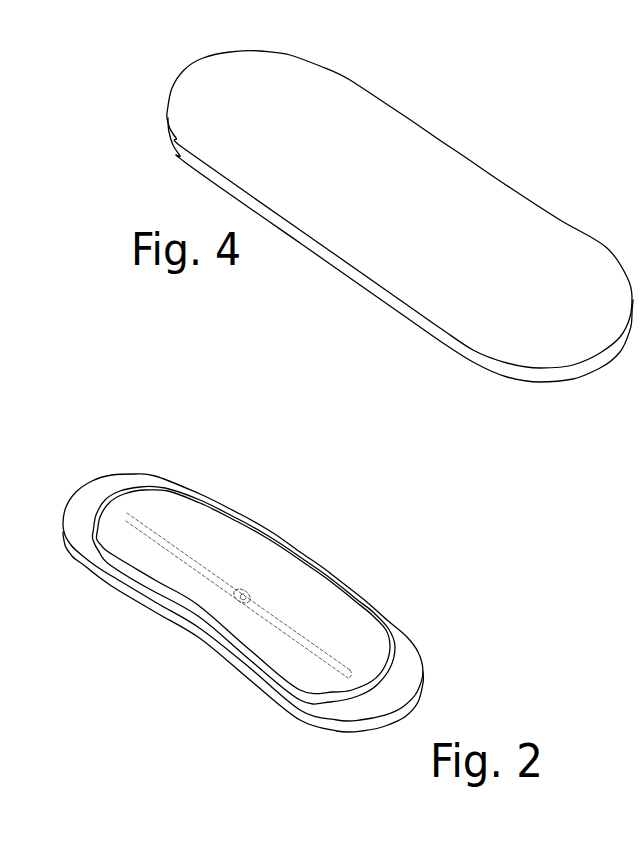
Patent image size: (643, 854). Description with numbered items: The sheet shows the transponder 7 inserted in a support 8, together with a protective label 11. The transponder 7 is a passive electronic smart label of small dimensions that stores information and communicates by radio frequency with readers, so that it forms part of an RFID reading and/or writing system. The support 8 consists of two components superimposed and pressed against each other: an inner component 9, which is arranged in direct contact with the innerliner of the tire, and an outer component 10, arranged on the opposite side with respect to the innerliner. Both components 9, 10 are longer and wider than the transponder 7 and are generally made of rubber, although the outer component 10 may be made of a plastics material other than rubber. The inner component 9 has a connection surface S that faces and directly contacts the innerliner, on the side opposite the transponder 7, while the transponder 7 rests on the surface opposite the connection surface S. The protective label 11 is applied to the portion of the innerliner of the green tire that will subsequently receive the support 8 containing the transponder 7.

In FIG. 2, the transponder 7 is at (238, 588).
In FIG. 2, the support 8 is at (243, 583).
In FIG. 2, the inner component 9 is at (243, 583).
In FIG. 2, the outer component 10 is at (213, 537).
In FIG. 4, the protective label 11 is at (499, 218).
In FIG. 2, the connection surface S is at (255, 688).